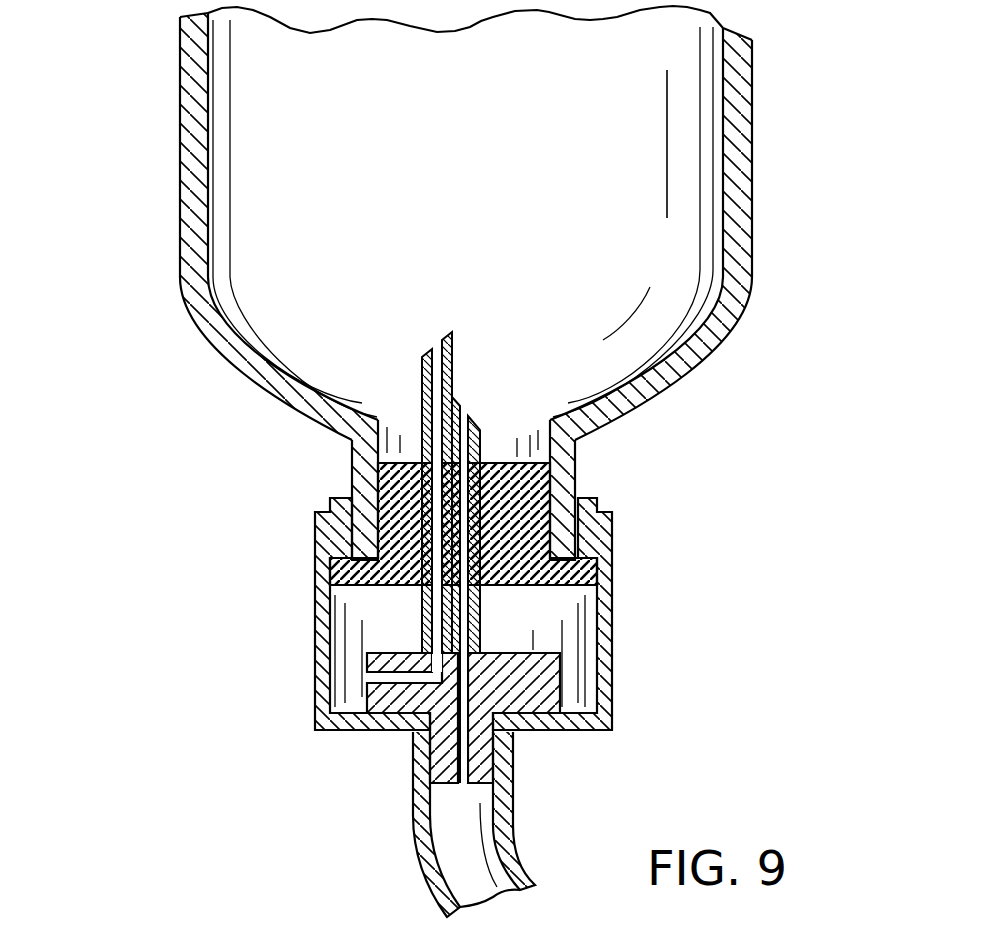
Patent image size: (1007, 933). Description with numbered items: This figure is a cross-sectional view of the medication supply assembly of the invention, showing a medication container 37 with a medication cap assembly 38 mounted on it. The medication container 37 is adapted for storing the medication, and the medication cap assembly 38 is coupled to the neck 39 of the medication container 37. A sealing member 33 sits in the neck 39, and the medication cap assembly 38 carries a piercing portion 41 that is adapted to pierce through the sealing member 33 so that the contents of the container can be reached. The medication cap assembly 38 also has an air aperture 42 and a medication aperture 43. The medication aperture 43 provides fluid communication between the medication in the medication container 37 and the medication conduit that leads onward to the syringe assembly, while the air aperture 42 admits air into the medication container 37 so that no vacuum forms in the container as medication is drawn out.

The sealing member 33 is at (380, 567).
The medication container 37 is at (680, 142).
The medication cap assembly 38 is at (720, 588).
The neck 39 is at (580, 463).
The piercing portion 41 is at (453, 430).
The air aperture 42 is at (437, 345).
The medication aperture 43 is at (467, 417).